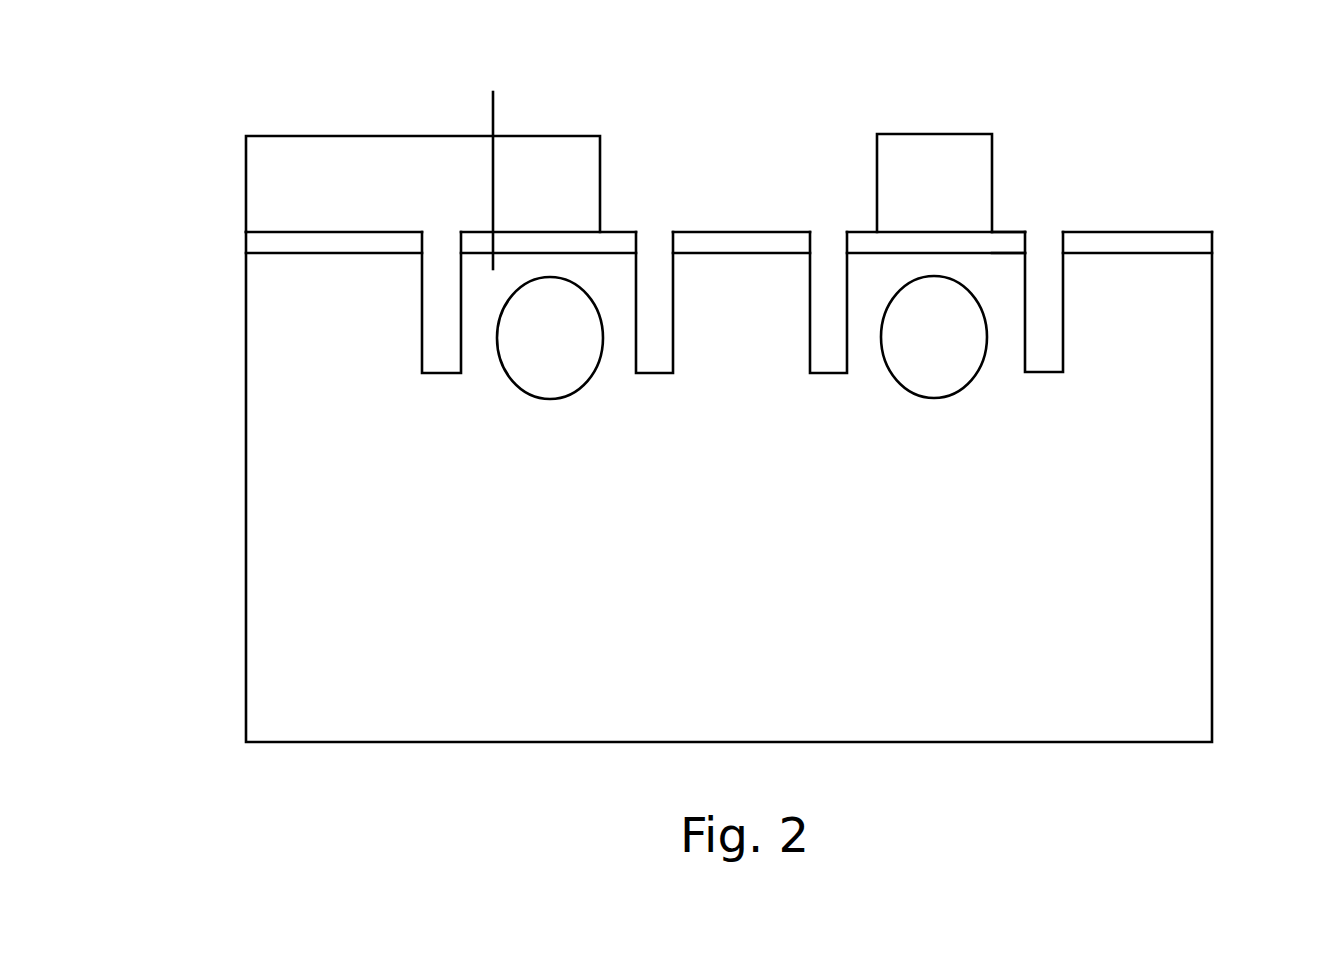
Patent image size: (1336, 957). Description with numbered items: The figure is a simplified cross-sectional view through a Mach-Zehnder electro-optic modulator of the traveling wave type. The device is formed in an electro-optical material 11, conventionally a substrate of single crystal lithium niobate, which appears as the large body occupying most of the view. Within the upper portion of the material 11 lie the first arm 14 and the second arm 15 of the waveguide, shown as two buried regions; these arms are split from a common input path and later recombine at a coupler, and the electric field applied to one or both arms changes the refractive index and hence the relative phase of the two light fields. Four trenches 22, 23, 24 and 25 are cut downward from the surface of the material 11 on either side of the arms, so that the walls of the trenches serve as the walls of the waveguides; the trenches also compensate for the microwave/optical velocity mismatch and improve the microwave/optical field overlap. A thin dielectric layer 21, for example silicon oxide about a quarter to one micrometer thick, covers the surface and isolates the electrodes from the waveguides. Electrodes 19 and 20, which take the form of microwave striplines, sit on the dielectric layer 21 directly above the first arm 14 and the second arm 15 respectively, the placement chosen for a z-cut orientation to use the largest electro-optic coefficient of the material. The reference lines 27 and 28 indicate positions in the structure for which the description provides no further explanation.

The electro-optical material 11 is at (1183, 404).
The first arm 14 is at (552, 292).
The second arm 15 is at (909, 305).
The electrode 19 is at (318, 150).
The electrode 20 is at (945, 152).
The dielectric layer 21 is at (1198, 238).
The trench 22 is at (430, 300).
The trench 23 is at (650, 248).
The trench 24 is at (827, 248).
The trench 25 is at (1045, 260).
The boundary line 27 is at (503, 151).
The surface layer portion 28 is at (998, 265).